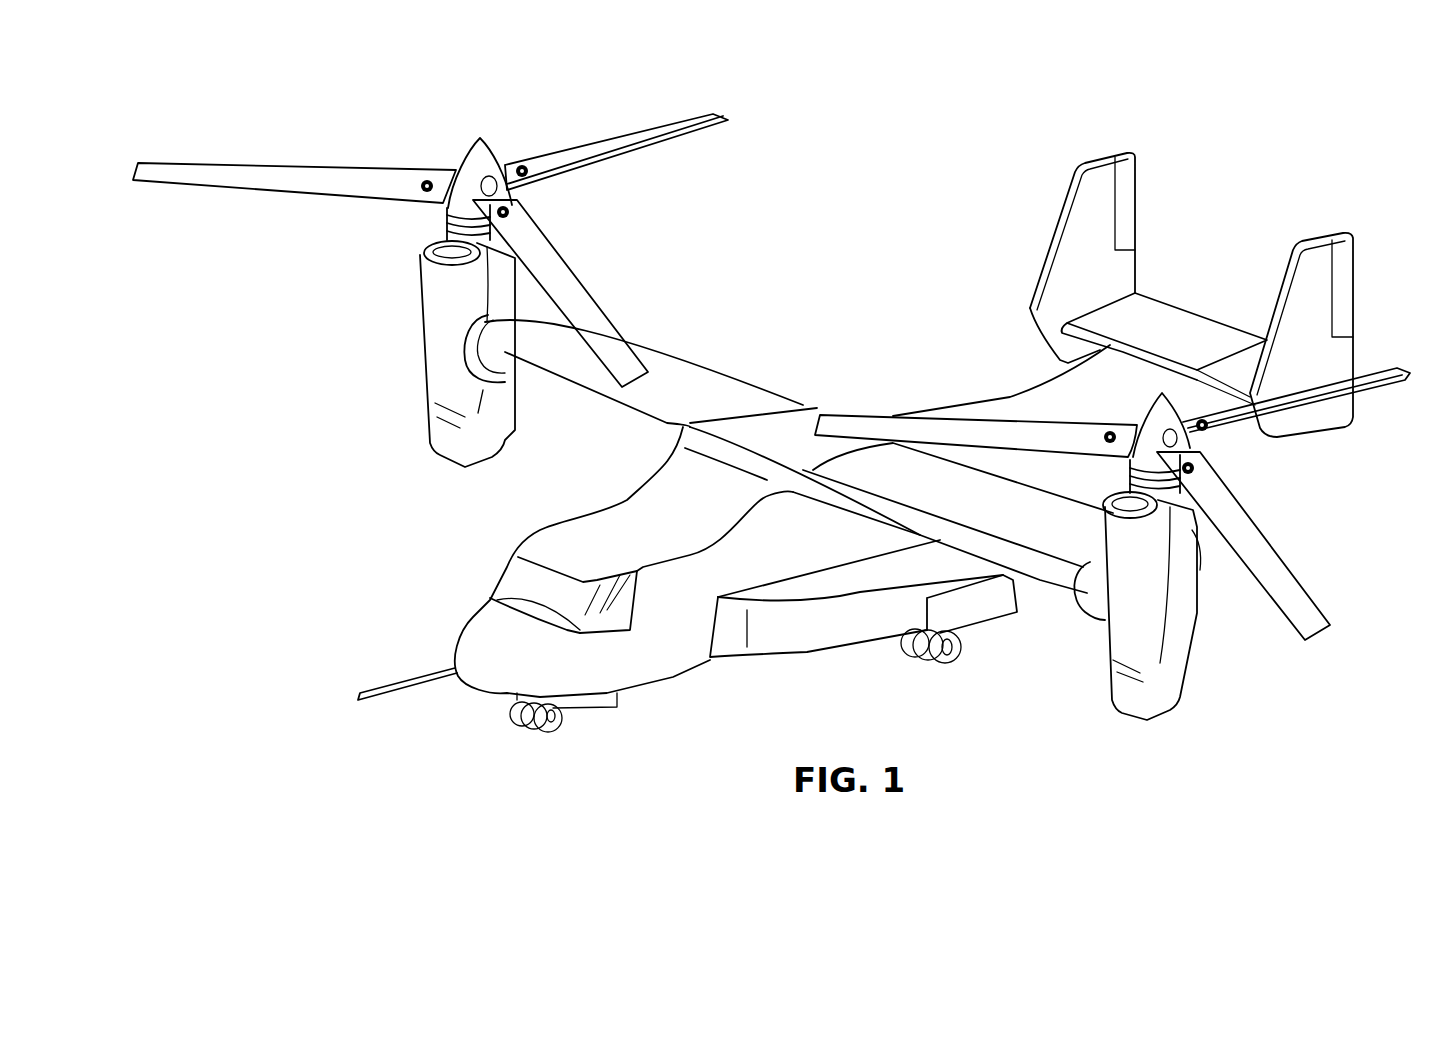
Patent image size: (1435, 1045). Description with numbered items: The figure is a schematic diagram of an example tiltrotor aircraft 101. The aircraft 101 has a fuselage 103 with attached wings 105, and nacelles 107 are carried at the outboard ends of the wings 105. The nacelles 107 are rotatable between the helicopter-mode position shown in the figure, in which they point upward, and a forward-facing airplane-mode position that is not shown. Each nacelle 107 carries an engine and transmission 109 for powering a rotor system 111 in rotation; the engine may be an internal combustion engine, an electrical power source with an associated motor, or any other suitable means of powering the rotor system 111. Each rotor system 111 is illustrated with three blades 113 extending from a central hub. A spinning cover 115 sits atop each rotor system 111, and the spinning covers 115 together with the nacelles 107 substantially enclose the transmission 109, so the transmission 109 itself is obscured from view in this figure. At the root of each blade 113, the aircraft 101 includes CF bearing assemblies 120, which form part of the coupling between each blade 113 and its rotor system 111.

The tiltrotor aircraft 101 is at (906, 203).
The fuselage 103 is at (790, 653).
The wings 105 is at (720, 378).
The nacelles 107 is at (428, 330).
The engines and transmissions 109 is at (425, 217).
The rotor systems 111 is at (461, 105).
The blades 113 is at (300, 165).
The spinning covers 115 is at (460, 162).
The CF bearing assemblies 120 is at (427, 186).